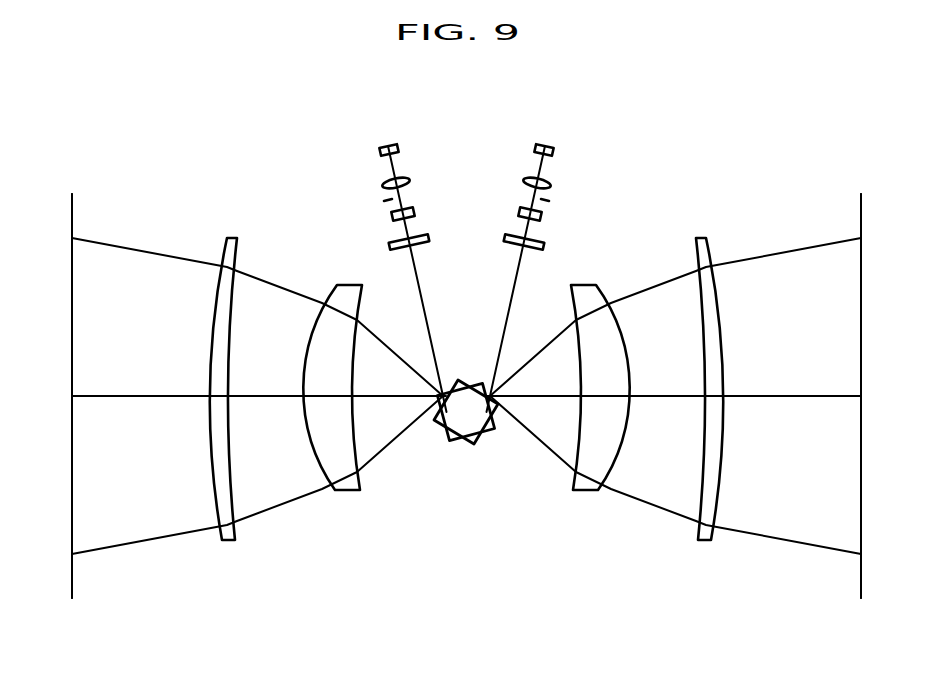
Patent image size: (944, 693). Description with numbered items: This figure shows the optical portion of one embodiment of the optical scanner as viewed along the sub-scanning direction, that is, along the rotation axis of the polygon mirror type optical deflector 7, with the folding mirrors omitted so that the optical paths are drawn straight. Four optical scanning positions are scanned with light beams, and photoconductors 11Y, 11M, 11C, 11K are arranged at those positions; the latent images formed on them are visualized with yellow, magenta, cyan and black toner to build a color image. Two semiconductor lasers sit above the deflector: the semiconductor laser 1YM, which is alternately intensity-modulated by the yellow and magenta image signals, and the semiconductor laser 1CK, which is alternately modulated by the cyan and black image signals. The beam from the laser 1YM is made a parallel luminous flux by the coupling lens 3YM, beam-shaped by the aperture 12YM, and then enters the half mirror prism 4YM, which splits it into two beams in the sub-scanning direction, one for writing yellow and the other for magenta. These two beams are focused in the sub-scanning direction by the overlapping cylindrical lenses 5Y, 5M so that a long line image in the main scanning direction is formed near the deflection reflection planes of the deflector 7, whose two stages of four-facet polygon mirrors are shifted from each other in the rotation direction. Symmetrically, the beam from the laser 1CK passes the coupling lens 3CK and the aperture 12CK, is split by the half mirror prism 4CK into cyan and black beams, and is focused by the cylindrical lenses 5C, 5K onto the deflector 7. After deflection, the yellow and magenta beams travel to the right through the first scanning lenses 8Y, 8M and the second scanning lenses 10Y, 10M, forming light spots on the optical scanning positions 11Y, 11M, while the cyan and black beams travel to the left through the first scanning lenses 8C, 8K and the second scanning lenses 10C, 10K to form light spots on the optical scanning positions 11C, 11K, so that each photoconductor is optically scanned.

The semiconductor laser 1CK is at (378, 148).
The coupling lens 3CK is at (383, 186).
The half mirror prism 4CK is at (392, 218).
The cylindrical lens 5C is at (348, 243).
The cylindrical lens 5K is at (392, 248).
The aperture 12CK is at (402, 198).
The semiconductor laser 1YM is at (555, 148).
The coupling lens 3YM is at (550, 186).
The half mirror prism 4YM is at (541, 218).
The cylindrical lens 5Y is at (587, 243).
The cylindrical lens 5M is at (541, 248).
The aperture 12YM is at (532, 200).
The polygon mirror type optical deflector 7 is at (483, 422).
The first scanning lens 8C is at (302, 387).
The first scanning lens 8K is at (317, 350).
The first scanning lens 8Y is at (631, 387).
The first scanning lens 8M is at (615, 350).
The second scanning lens 10C is at (184, 389).
The second scanning lens 10K is at (221, 348).
The second scanning lens 10Y is at (754, 389).
The second scanning lens 10M is at (711, 348).
The photoconductor 11C is at (142, 381).
The photoconductor 11K is at (73, 208).
The photoconductor 11Y is at (789, 381).
The photoconductor 11M is at (860, 208).